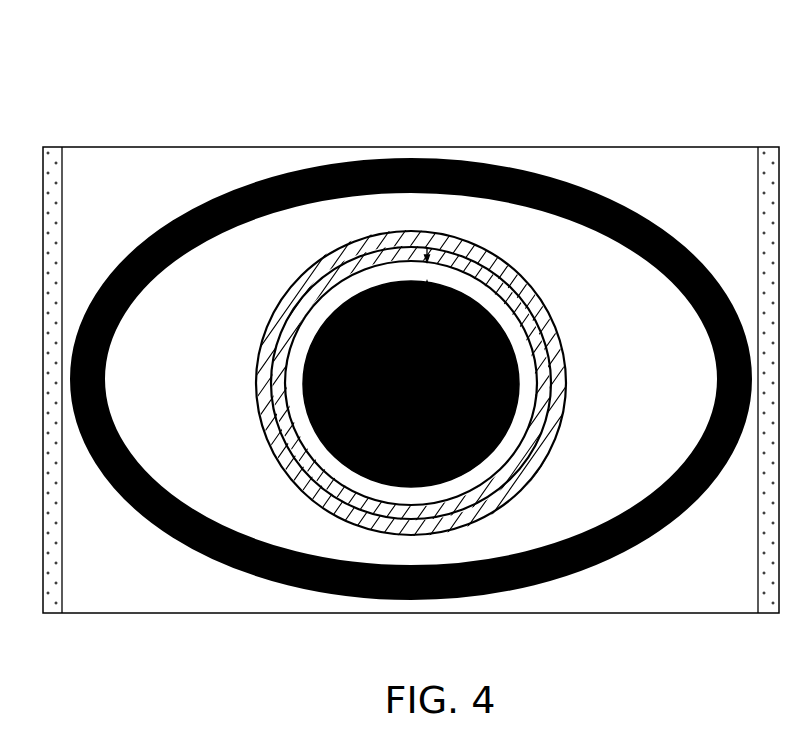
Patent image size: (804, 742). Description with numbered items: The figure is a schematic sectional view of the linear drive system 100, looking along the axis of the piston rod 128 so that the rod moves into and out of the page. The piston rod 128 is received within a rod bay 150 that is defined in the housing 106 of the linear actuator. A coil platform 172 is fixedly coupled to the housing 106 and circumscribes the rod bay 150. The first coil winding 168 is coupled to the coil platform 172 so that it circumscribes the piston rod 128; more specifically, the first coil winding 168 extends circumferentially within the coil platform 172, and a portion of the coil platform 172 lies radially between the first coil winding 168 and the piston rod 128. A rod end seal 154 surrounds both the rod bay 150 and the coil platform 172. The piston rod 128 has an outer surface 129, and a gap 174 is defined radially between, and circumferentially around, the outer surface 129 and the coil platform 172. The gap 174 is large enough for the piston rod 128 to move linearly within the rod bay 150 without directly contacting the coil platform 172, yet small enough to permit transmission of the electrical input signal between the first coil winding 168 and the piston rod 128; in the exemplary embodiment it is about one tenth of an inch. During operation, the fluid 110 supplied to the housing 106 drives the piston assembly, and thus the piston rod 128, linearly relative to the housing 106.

The linear drive system 100 is at (625, 82).
The housing 106 is at (184, 585).
The rod end seal 154 is at (117, 493).
The coil platform 172 is at (308, 484).
The first coil winding 168 is at (523, 475).
The outer surface 129 is at (297, 428).
The piston rod 128 is at (284, 385).
The fluid 110 is at (457, 499).
The rod bay 150 is at (530, 422).
The gap 174 is at (432, 247).